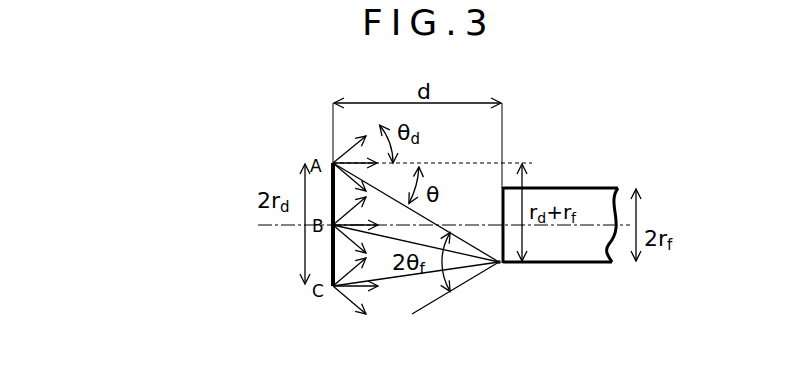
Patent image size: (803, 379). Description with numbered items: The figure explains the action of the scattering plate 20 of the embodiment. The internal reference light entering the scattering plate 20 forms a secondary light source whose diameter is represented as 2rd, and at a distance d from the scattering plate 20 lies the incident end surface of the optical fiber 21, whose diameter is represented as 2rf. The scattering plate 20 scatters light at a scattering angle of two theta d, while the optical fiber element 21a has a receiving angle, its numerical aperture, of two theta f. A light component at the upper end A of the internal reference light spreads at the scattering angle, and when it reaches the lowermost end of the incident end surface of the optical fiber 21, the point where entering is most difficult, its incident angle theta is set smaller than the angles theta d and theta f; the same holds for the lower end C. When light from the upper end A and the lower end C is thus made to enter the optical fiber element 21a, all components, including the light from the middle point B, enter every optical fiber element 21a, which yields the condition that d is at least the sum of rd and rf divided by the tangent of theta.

The scattering plate 20 is at (331, 250).
The optical fiber 21 is at (595, 188).
The optical fiber element 21a is at (500, 263).